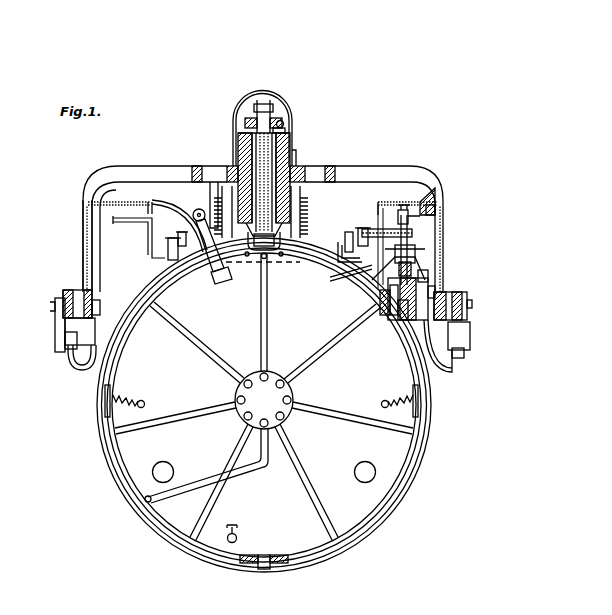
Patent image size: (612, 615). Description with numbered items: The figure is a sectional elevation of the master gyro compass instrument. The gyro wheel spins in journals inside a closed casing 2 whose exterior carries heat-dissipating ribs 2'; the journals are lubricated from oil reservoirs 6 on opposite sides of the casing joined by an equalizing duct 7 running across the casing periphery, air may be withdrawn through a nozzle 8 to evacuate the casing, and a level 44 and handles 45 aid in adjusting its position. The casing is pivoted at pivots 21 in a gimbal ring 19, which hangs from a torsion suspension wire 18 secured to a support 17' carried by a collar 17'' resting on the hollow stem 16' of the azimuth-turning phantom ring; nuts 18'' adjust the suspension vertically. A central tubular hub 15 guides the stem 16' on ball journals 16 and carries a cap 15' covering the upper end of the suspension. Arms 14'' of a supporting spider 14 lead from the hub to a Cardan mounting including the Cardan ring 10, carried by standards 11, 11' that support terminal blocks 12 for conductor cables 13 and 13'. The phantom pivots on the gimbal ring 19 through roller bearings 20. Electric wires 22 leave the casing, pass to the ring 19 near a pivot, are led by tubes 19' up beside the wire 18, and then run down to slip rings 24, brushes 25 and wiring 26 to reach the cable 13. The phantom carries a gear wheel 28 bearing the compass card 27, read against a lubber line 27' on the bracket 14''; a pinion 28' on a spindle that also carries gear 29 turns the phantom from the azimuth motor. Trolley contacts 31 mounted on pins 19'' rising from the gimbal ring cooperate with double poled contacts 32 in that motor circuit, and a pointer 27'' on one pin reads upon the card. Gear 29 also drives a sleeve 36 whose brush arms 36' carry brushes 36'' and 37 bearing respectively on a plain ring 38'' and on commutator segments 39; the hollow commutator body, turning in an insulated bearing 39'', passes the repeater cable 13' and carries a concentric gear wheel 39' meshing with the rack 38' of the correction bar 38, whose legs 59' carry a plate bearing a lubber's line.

The closed casing 2 is at (247, 397).
The heat-dissipating ribs 2' is at (344, 463).
The oil reservoirs 6 is at (264, 400).
The equalizing duct 7 is at (242, 471).
The nozzle 8 is at (238, 535).
The Cardan ring 10 is at (468, 300).
The standards 11 is at (254, 332).
The clamp 11' is at (481, 313).
The electrical terminal blocks 12 is at (465, 352).
The conductor cable 13 is at (81, 300).
The cable connections 13' is at (461, 350).
The supporting spider 14 is at (110, 241).
The brackets or arms 14'' is at (263, 229).
The central tubular hub 15 is at (277, 165).
The cap 15' is at (253, 118).
The ball journals 16 is at (246, 178).
The hollow stem 16' is at (301, 178).
The support 17' is at (263, 102).
The collar 17'' is at (312, 130).
The torsion suspension wire 18 is at (220, 174).
The nuts 18'' is at (286, 101).
The gimbal ring 19 is at (243, 405).
The tubes 19' is at (259, 276).
The pins 19'' is at (276, 260).
The anti-friction roller bearings 20 is at (270, 252).
The pivots 21 is at (106, 411).
The electric wires 22 is at (125, 398).
The slip rings 24 is at (300, 197).
The brushes 25 is at (212, 206).
The wiring 26 is at (210, 184).
The compass card 27 is at (262, 201).
The lubber line 27' is at (445, 196).
The pointer 27'' is at (173, 216).
The gear wheel 28 is at (130, 237).
The pinion 28' is at (425, 247).
The gear 29 is at (414, 233).
The trolley contact 31 is at (170, 238).
The double poled contact 32 is at (178, 237).
The sleeve 36 is at (429, 250).
The brush arms 36' is at (335, 260).
The brush 36'' is at (426, 267).
The brush 37 is at (370, 285).
The bar 38 is at (415, 307).
The rack 38' is at (454, 291).
The plain ring 38'' is at (450, 277).
The commutator segments 39 is at (377, 310).
The concentric gear wheel 39' is at (391, 330).
The insulated bearing 39'' is at (379, 315).
The level 44 is at (193, 214).
The handles 45 is at (168, 463).
The legs 59' is at (451, 211).